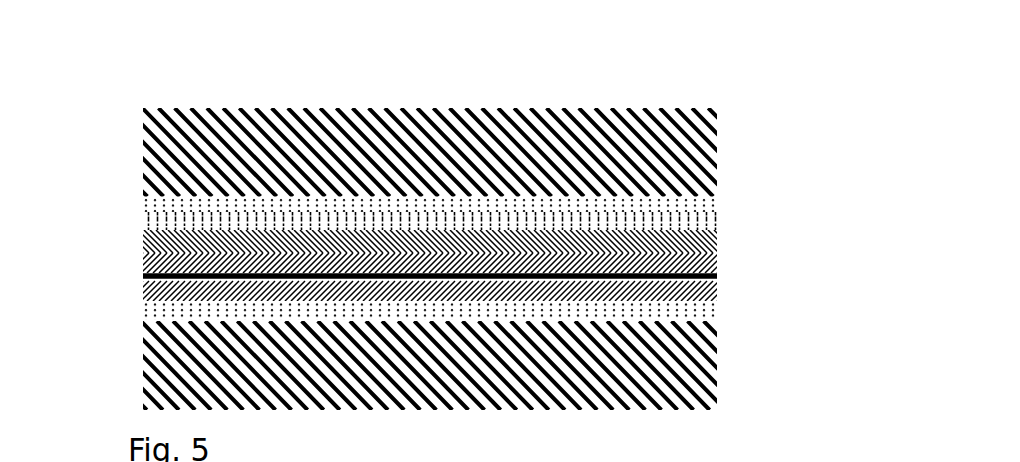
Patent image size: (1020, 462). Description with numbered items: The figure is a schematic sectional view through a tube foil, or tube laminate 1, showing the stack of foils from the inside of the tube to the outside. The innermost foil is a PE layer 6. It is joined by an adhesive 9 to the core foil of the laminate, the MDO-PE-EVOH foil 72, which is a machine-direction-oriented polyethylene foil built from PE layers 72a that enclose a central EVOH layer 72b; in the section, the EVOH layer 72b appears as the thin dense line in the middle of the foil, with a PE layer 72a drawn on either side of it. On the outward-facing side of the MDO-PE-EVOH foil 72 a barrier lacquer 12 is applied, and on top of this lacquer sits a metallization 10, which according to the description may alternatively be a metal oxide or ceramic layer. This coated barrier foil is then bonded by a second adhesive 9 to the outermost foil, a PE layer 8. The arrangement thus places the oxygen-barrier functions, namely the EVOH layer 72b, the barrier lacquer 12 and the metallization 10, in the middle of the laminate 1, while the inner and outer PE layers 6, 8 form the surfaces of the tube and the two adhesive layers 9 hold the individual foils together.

The laminated composite 1 is at (600, 85).
The PE layer 6 is at (660, 365).
The PE layer 8 is at (658, 147).
The adhesive 9 is at (790, 335).
The metallization 10 is at (687, 222).
The barrier lacquer 12 is at (702, 240).
The MDO-PE-EVOH foil 72 is at (682, 285).
The PE layers 72a is at (190, 285).
The EVOH layer 72b is at (148, 273).